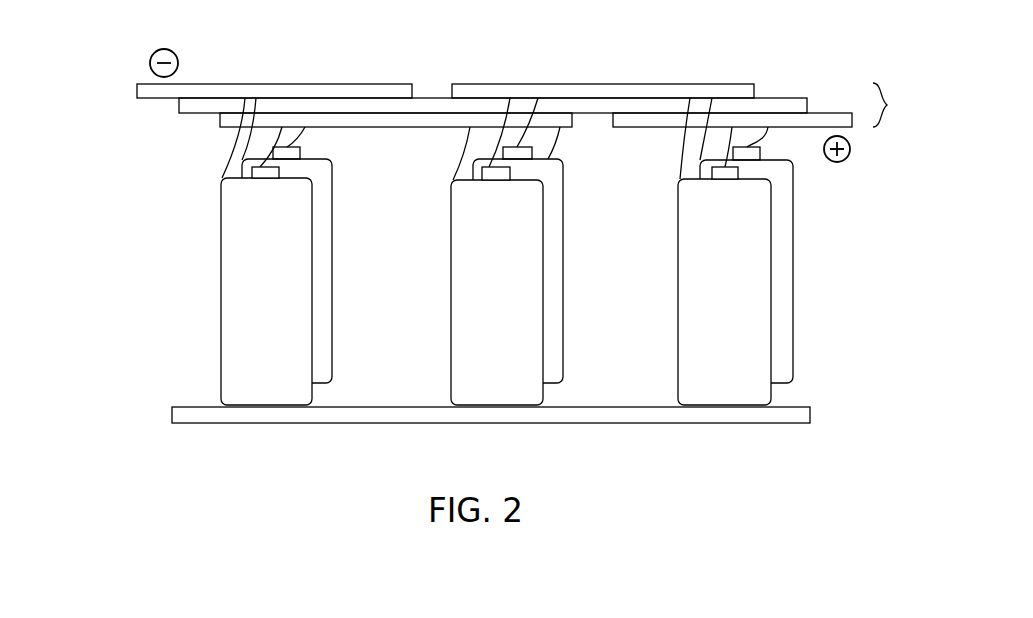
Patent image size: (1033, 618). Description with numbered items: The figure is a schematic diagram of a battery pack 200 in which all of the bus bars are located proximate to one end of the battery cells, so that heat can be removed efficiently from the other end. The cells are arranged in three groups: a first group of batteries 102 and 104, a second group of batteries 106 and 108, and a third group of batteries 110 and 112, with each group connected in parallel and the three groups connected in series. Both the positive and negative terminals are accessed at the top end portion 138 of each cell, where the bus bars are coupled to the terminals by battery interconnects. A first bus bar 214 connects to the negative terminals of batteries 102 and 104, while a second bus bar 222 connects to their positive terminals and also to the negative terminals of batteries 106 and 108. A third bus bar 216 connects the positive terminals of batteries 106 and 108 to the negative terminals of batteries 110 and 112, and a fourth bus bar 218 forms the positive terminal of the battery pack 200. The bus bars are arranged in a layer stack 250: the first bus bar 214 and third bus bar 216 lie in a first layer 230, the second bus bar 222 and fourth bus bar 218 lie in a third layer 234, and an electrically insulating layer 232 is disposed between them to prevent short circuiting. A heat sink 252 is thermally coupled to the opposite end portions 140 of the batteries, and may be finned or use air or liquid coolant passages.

The battery pack 200 is at (127, 68).
The battery 102 is at (312, 308).
The battery 104 is at (333, 203).
The battery 106 is at (543, 268).
The battery 108 is at (563, 190).
The battery 110 is at (771, 280).
The battery 112 is at (793, 212).
The top end portion 138 is at (282, 220).
The opposite end portion 140 is at (282, 395).
The first bus bar 214 is at (305, 84).
The third bus bar 216 is at (593, 84).
The fourth bus bar 218 is at (809, 128).
The second bus bar 222 is at (412, 127).
The first layer 230 is at (137, 92).
The electrically insulating layer 232 is at (179, 107).
The third layer 234 is at (220, 120).
The layer stack 250 is at (902, 105).
The heat sink 252 is at (377, 423).